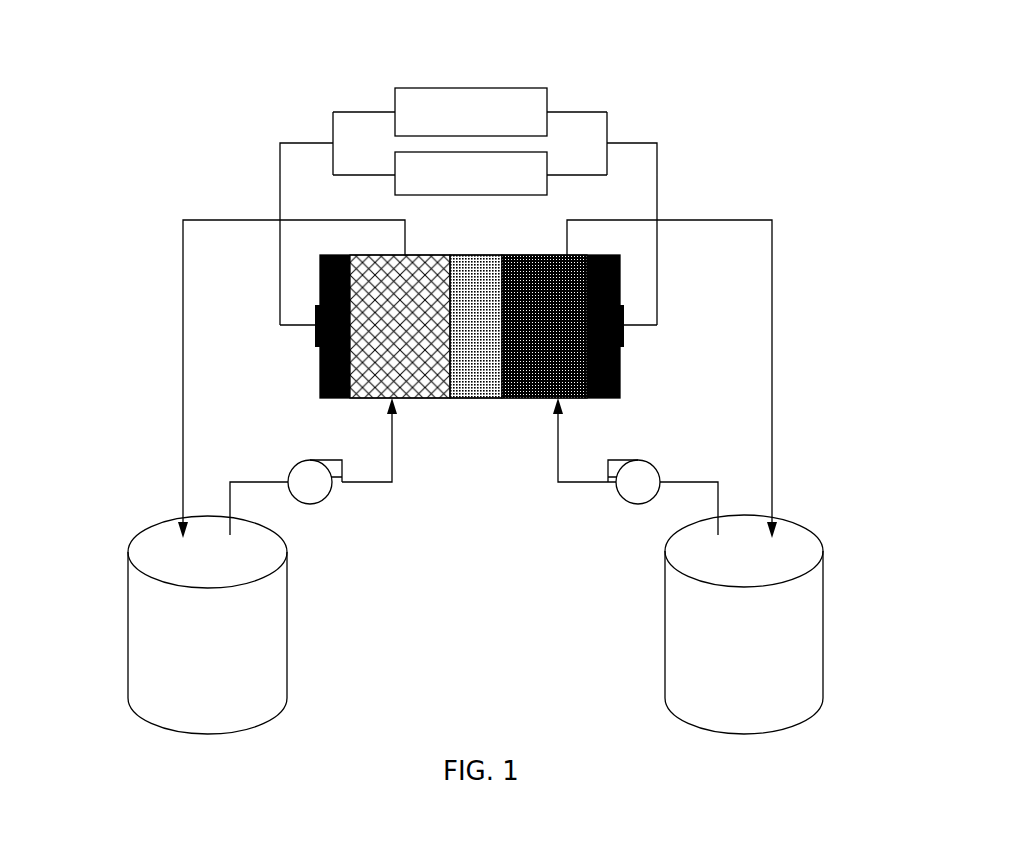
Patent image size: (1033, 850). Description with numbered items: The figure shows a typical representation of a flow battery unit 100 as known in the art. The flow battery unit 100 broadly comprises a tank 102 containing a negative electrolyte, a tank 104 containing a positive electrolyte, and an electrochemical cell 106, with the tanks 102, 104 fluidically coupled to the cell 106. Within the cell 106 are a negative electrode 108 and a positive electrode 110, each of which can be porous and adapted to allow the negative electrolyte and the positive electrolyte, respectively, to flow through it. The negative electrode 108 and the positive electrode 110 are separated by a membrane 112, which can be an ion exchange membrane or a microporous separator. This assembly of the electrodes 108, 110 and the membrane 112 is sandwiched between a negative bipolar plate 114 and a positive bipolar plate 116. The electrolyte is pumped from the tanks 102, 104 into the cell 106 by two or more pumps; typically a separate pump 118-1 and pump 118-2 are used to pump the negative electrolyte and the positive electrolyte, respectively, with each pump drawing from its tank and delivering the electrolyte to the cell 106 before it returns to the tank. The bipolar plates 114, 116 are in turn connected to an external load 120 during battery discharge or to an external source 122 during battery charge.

The flow battery unit 100 is at (126, 36).
The tank 102 is at (145, 642).
The tank 104 is at (828, 626).
The electrochemical cell 106 is at (618, 408).
The negative electrode 108 is at (377, 258).
The positive electrode 110 is at (566, 260).
The membrane 112 is at (486, 382).
The negative bipolar plate 114 is at (305, 282).
The positive bipolar plate 116 is at (640, 370).
The pump 118-1 is at (278, 462).
The pump 118-2 is at (672, 465).
The external load 120 is at (562, 148).
The external source 122 is at (562, 86).